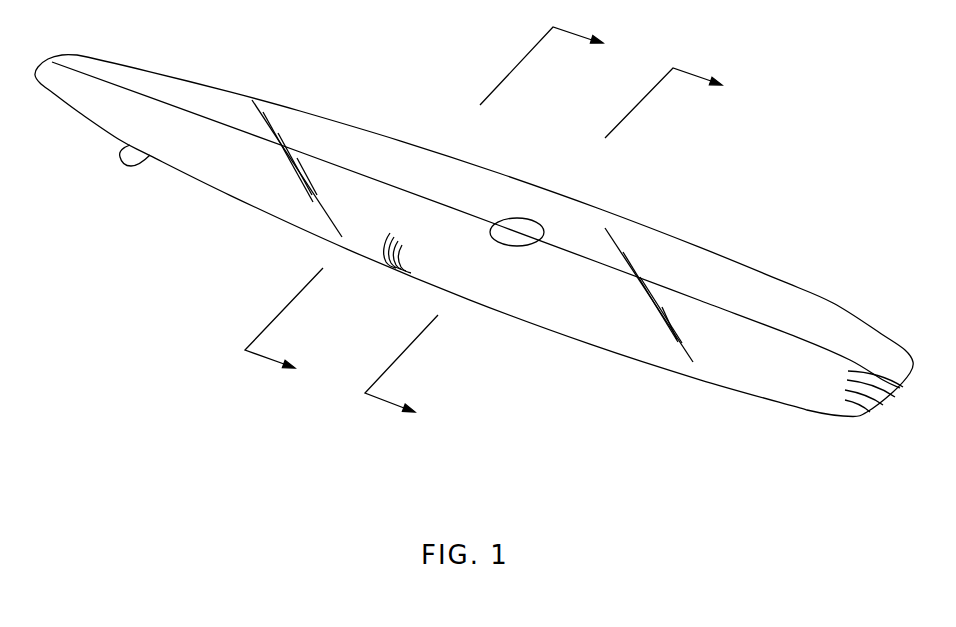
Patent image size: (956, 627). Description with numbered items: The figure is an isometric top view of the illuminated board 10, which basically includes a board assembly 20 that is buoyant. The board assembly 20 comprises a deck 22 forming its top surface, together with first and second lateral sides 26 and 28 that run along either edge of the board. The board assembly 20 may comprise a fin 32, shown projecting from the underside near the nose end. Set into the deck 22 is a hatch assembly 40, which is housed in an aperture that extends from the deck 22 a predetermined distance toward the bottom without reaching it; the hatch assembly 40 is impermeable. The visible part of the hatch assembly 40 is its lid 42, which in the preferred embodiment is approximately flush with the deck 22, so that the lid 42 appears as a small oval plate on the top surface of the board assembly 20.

The illuminated board 10 is at (474, 225).
The board assembly 20 is at (474, 236).
The deck 22 is at (212, 117).
The first lateral side 26 is at (588, 345).
The second lateral side 28 is at (633, 222).
The fin 32 is at (125, 165).
The hatch assembly 40 is at (519, 208).
The lid 42 is at (517, 232).